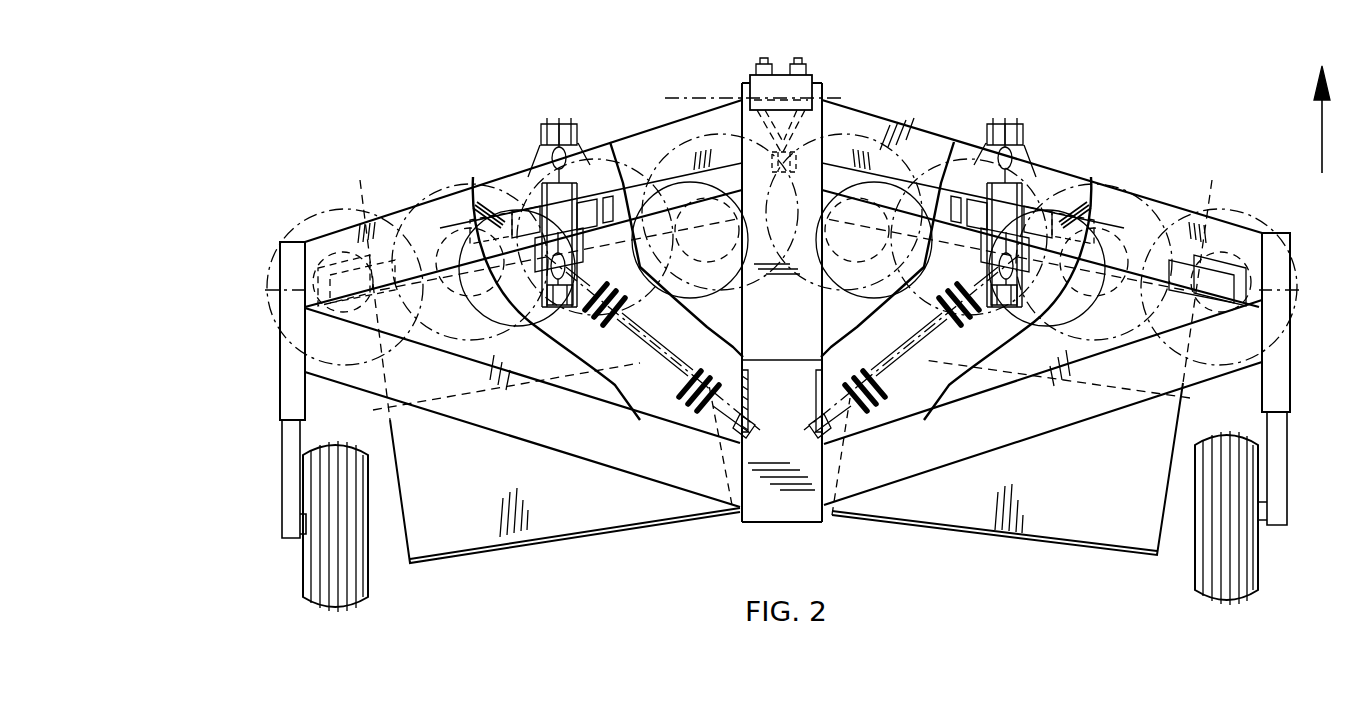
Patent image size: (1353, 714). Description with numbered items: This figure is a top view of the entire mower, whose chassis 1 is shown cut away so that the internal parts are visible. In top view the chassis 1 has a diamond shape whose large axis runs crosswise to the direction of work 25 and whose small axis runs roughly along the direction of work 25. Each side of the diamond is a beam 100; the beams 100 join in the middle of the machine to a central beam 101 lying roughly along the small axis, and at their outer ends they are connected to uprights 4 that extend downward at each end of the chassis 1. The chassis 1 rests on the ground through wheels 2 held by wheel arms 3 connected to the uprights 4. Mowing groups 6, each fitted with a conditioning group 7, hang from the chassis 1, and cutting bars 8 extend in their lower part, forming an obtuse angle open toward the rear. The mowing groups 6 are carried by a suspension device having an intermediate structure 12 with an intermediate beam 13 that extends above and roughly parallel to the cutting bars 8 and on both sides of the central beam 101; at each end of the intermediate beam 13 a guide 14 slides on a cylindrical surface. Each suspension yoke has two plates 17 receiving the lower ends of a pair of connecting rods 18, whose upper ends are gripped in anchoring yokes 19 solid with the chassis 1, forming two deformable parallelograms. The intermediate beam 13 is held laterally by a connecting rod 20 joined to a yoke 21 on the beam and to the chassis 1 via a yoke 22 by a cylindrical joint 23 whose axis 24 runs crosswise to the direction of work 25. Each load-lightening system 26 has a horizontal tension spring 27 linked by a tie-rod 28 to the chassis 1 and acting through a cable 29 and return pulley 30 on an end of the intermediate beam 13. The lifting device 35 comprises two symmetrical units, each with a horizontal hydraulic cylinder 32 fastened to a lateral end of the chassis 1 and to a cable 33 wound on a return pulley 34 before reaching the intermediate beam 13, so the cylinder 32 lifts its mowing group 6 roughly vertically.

The chassis 1 is at (931, 122).
The wheels 2 is at (348, 568).
The wheel arms 3 is at (288, 517).
The uprights 4 is at (280, 356).
The mowing groups 6 is at (632, 304).
The conditioning group 7 is at (438, 485).
The cutting bars 8 is at (463, 330).
The intermediate structure 12 is at (692, 202).
The intermediate beam 13 is at (643, 205).
The guide 14 is at (536, 212).
The plates 17 is at (543, 310).
The connecting rods 18 is at (566, 158).
The anchoring yokes 19 is at (548, 138).
The connecting rod 20 is at (824, 132).
The yoke 21 is at (770, 160).
The yoke 22 is at (752, 84).
The cylindrical joint 23 is at (781, 95).
The axis 24 is at (742, 96).
The direction of work 25 is at (1322, 122).
The load-lightening system 26 is at (658, 364).
The tension spring 27 is at (694, 420).
The tie-rod 28 is at (748, 404).
The cable 29 is at (505, 258).
The return pulley 30 is at (476, 210).
The hydraulic cylinder 32 is at (338, 242).
The cable 33 is at (463, 278).
The return pulley 34 is at (448, 220).
The lifting device 35 is at (405, 238).
The beam 100 is at (310, 232).
The central beam 101 is at (786, 334).